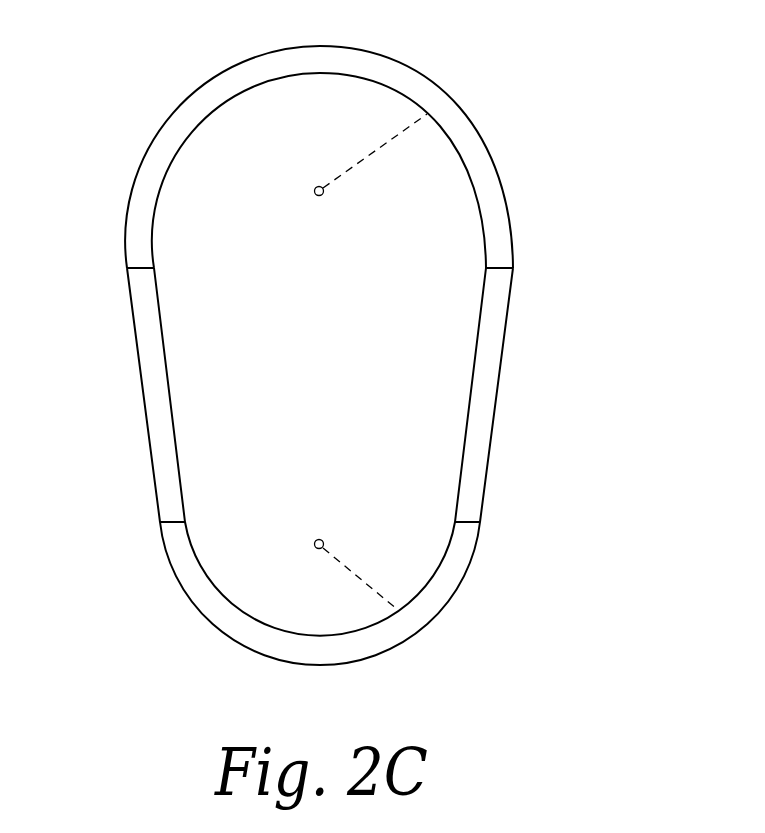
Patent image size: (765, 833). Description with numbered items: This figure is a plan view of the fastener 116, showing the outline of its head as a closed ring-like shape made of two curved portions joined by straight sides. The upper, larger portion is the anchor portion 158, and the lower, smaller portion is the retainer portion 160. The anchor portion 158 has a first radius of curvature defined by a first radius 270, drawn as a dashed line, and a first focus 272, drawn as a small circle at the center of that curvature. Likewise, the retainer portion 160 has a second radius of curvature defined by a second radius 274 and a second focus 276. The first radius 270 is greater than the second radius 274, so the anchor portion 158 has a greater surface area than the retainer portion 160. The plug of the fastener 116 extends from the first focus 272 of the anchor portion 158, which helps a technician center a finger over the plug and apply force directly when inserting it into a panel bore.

The fastener 116 is at (376, 355).
The anchor portion 158 is at (228, 181).
The retainer portion 160 is at (252, 547).
The first radius 270 is at (370, 156).
The first focus 272 is at (319, 196).
The second radius 274 is at (345, 565).
The second focus 276 is at (319, 539).